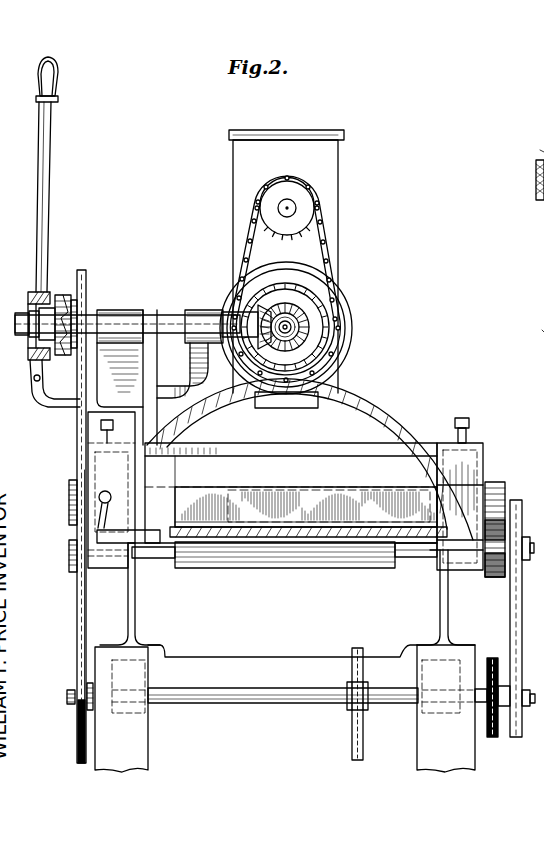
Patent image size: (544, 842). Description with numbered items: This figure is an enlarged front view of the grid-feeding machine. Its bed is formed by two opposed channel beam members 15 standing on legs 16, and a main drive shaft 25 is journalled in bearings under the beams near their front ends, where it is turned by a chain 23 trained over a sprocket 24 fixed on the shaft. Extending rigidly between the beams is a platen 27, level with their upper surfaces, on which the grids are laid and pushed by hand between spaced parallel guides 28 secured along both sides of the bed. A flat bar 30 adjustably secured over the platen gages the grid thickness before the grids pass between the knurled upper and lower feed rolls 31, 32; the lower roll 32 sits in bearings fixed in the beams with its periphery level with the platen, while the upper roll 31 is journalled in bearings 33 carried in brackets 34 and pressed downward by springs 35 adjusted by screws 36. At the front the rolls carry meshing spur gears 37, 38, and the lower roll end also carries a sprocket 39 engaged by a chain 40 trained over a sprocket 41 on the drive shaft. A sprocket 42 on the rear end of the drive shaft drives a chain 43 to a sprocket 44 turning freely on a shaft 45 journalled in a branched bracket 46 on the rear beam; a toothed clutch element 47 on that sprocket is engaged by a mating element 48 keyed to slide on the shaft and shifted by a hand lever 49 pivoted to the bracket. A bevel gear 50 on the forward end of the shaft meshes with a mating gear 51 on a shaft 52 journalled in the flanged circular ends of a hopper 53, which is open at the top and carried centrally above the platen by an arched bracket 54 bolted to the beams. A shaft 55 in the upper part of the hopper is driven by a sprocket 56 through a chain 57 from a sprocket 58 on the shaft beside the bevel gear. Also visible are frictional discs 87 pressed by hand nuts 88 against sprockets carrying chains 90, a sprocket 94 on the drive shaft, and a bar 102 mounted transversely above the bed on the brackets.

The channel beam members 15 is at (135, 608).
The legs 16 is at (148, 757).
The chain 23 is at (351, 756).
The sprocket 24 is at (347, 706).
The main drive shaft 25 is at (232, 703).
The platen 27 is at (278, 540).
The guides 28 is at (417, 557).
The flat bar 30 is at (315, 494).
The upper feed roll 31 is at (238, 492).
The lower feed roll 32 is at (325, 568).
The bearings 33 is at (486, 462).
The brackets 34 is at (88, 458).
The springs 35 is at (78, 478).
The screws 36 is at (466, 411).
The spur gear 37 is at (69, 510).
The spur gear 38 is at (494, 578).
The sprocket 39 is at (527, 536).
The chain 40 is at (526, 602).
The sprocket 41 is at (521, 732).
The sprocket 42 is at (77, 737).
The chain 43 is at (78, 614).
The sprocket 44 is at (88, 286).
The shaft 45 is at (176, 306).
The branched bracket 46 is at (140, 366).
The toothed clutch element 47 is at (76, 300).
The clutch element 48 is at (63, 295).
The hand lever 49 is at (44, 217).
The bevel gear 50 is at (283, 316).
The bevel gear 51 is at (284, 346).
The shaft 52 is at (292, 324).
The hopper 53 is at (352, 344).
The arched bracket 54 is at (388, 406).
The shaft 55 is at (293, 205).
The sprocket 56 is at (268, 208).
The chain 57 is at (243, 252).
The sprocket 58 is at (318, 300).
The frictional discs 87 is at (533, 138).
The hand nuts 88 is at (536, 176).
The chains 90 is at (534, 319).
The sprocket 94 is at (488, 732).
The bar 102 is at (312, 455).